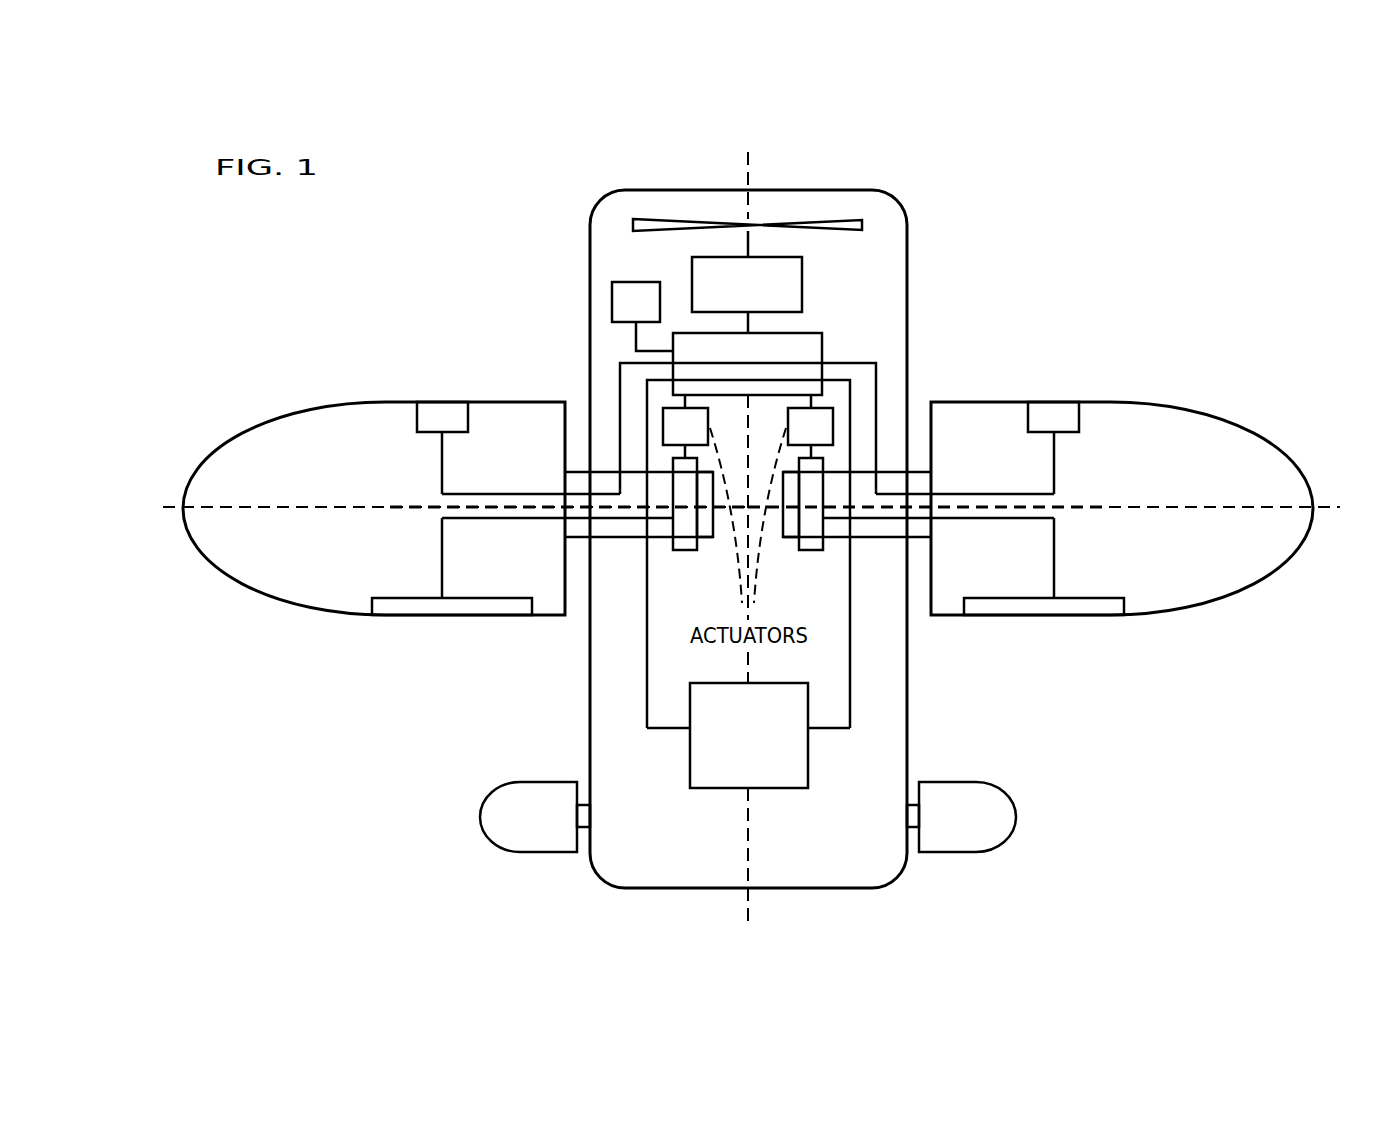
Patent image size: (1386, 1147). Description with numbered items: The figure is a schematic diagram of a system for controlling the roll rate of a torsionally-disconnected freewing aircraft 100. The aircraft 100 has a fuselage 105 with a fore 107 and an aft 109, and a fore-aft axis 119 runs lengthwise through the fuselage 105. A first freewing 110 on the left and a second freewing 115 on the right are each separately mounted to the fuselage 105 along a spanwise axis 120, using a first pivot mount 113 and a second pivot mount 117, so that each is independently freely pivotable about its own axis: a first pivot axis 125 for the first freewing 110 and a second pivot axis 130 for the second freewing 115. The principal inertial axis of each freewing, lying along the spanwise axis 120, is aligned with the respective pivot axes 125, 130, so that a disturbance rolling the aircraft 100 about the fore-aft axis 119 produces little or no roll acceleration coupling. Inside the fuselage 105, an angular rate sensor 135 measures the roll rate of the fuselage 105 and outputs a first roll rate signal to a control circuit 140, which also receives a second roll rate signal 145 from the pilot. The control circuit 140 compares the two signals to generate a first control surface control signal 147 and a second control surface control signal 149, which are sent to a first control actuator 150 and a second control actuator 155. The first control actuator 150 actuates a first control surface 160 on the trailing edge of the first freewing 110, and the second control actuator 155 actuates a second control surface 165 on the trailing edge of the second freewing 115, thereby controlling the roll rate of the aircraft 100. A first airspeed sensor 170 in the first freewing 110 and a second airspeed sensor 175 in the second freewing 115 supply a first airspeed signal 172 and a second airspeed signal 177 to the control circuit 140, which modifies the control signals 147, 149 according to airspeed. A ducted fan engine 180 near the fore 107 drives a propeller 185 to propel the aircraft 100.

The aircraft 100 is at (334, 780).
The fuselage 105 is at (908, 258).
The fore 107 is at (864, 149).
The aft 109 is at (886, 903).
The first freewing 110 is at (273, 418).
The first pivot mount 113 is at (692, 550).
The second freewing 115 is at (1172, 402).
The second pivot mount 117 is at (804, 550).
The fore-aft axis 119 is at (746, 905).
The spanwise axis 120 is at (175, 508).
The first pivot axis 125 is at (435, 508).
The second pivot axis 130 is at (1070, 508).
The angular rate sensor 135 is at (795, 788).
The control circuit 140 is at (810, 333).
The second roll rate signal 145 is at (612, 282).
The first control surface control signal 147 is at (683, 401).
The second control surface control signal 149 is at (813, 404).
The first control actuator 150 is at (702, 505).
The second control actuator 155 is at (793, 505).
The first control surface 160 is at (465, 610).
The second control surface 165 is at (1077, 602).
The first airspeed sensor 170 is at (417, 420).
The first airspeed signal 172 is at (683, 400).
The second airspeed sensor 175 is at (1082, 418).
The second airspeed signal 177 is at (813, 402).
The ducted fan engine 180 is at (802, 285).
The propeller 185 is at (667, 232).